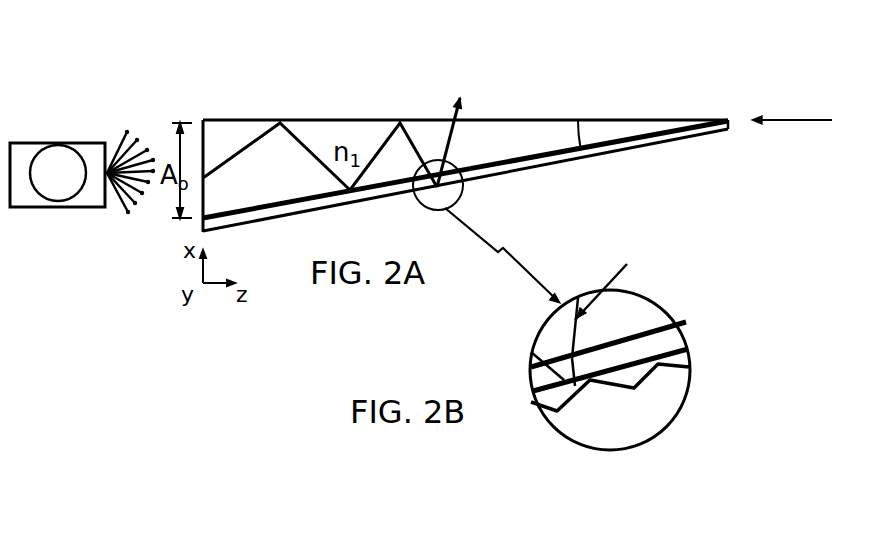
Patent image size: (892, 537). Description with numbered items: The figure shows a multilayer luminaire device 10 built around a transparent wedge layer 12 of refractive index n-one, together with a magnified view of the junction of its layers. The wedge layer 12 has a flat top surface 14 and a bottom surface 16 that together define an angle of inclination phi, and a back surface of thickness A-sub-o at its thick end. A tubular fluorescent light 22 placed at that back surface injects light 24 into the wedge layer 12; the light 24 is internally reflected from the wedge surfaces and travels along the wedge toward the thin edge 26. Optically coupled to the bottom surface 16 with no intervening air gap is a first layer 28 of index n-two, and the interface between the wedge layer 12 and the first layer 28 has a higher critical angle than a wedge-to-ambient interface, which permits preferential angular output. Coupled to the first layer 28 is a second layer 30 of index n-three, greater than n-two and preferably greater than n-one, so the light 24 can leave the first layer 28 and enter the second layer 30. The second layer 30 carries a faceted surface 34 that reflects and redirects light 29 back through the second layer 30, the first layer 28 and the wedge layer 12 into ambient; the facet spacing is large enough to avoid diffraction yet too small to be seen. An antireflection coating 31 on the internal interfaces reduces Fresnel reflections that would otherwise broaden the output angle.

In FIG. 2A, the multilayer luminaire device 10 is at (490, 112).
In FIG. 2A, the wedge layer 12 is at (247, 176).
In FIG. 2B, the wedge layer 12 is at (553, 328).
In FIG. 2A, the top surface 14 is at (382, 140).
In FIG. 2A, the bottom surface 16 is at (502, 158).
In FIG. 2A, the tubular fluorescent light 22 is at (70, 142).
In FIG. 2A, the light 24 is at (342, 120).
In FIG. 2A, the edge 26 is at (813, 120).
In FIG. 2A, the first layer 28 is at (600, 152).
In FIG. 2A, the light 29 is at (457, 105).
In FIG. 2B, the light 29 is at (618, 285).
In FIG. 2A, the second layer 30 is at (608, 153).
In FIG. 2B, the second layer 30 is at (613, 375).
In FIG. 2A, the antireflection coating 31 is at (537, 169).
In FIG. 2B, the antireflection coating 31 is at (640, 330).
In FIG. 2B, the faceted surface 34 is at (602, 387).